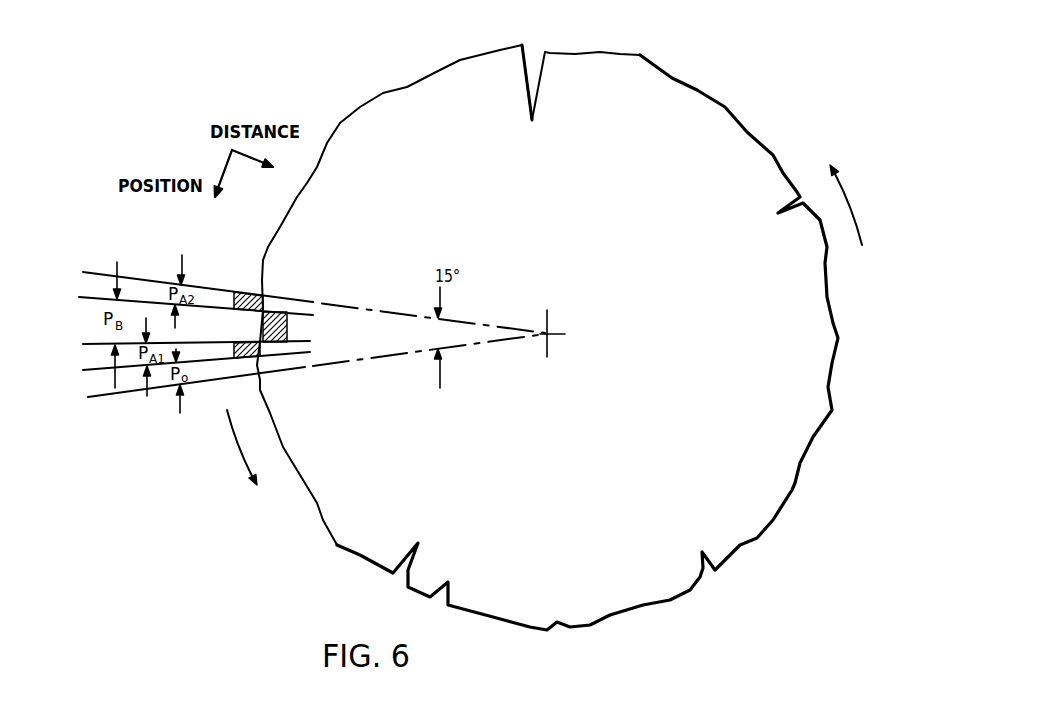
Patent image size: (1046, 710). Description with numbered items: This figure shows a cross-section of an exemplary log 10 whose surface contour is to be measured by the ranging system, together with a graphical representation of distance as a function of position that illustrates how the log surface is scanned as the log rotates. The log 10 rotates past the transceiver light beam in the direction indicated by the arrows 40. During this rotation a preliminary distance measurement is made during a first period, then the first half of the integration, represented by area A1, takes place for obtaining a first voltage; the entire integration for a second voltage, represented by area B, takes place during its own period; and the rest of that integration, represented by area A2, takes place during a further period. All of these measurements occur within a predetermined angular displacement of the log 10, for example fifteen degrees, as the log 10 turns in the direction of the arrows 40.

The log 10 is at (715, 123).
The arrows 40 is at (848, 203).
The area A1 is at (222, 342).
The area A2 is at (237, 292).
The area B is at (288, 327).